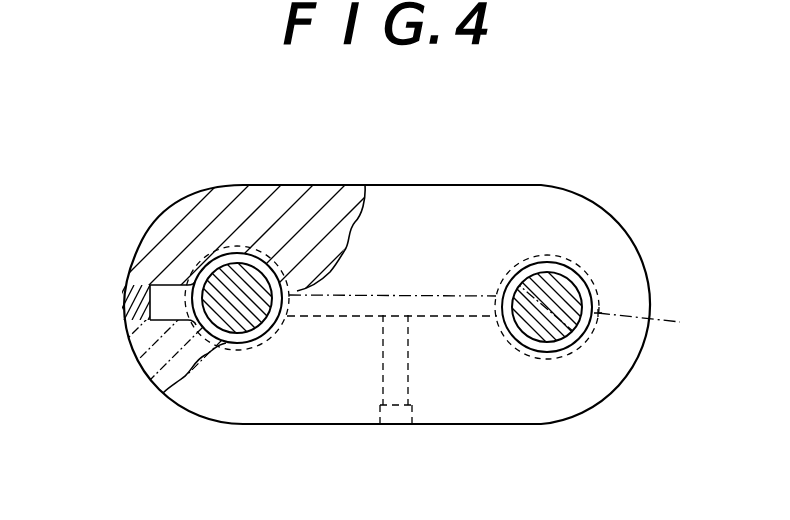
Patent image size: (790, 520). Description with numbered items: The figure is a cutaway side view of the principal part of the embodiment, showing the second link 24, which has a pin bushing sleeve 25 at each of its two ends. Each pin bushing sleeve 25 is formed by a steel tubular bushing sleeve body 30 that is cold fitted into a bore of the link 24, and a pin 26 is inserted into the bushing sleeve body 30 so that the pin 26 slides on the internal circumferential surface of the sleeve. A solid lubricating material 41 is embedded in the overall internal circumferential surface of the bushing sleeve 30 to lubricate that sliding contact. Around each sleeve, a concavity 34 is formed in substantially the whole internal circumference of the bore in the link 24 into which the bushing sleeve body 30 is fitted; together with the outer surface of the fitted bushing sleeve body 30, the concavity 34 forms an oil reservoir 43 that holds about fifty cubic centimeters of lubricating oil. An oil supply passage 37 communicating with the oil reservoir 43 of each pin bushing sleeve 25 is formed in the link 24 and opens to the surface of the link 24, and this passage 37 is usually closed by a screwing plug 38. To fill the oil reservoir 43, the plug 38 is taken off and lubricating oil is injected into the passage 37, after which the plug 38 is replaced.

The second link 24 is at (187, 412).
The pin bushing sleeve 25 is at (180, 257).
The pin 26 is at (228, 343).
The bushing sleeve body 30 is at (234, 263).
The concavity 34 is at (262, 257).
The oil supply passage 37 is at (460, 315).
The screwing plug 38 is at (398, 424).
The solid lubricating material 41 is at (222, 268).
The oil reservoir 43 is at (302, 284).